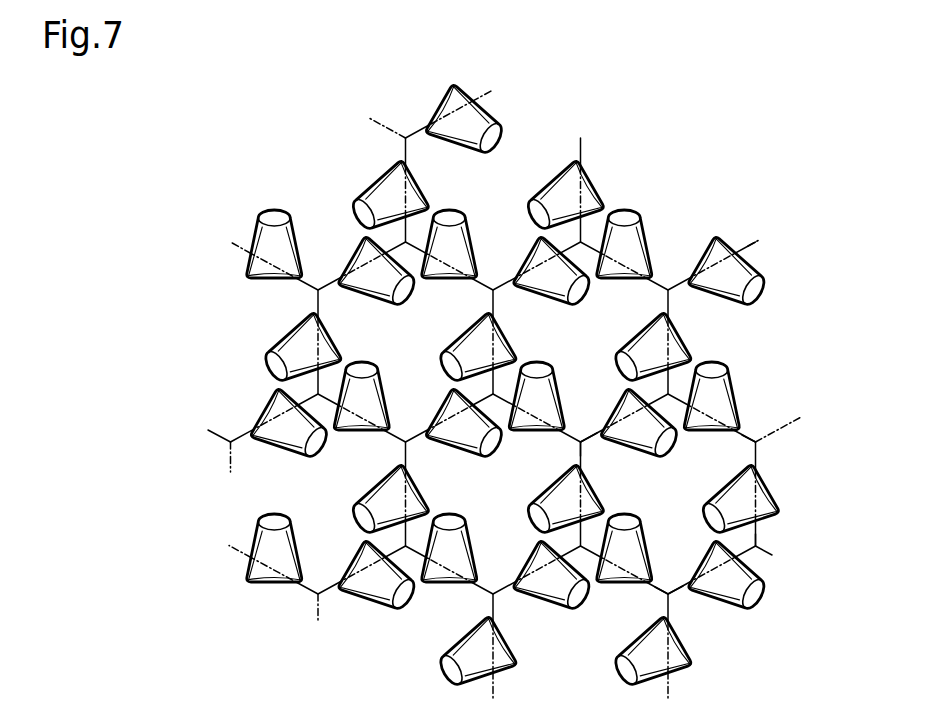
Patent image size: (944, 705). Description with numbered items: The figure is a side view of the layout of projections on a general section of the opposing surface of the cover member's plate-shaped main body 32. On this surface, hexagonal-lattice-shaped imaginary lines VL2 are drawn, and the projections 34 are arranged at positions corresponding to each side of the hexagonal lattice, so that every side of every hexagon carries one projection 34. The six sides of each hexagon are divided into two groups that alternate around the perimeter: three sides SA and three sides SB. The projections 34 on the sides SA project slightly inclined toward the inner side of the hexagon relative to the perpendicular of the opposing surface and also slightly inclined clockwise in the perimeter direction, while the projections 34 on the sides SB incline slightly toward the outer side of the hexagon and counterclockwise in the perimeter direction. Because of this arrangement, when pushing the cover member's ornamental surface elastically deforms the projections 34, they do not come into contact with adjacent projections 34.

The main body 32 is at (522, 391).
The projection 34 is at (625, 212).
The hexagonal-lattice-shaped imaginary line VL2 is at (749, 244).
The side SA is at (597, 436).
The side SB is at (746, 430).